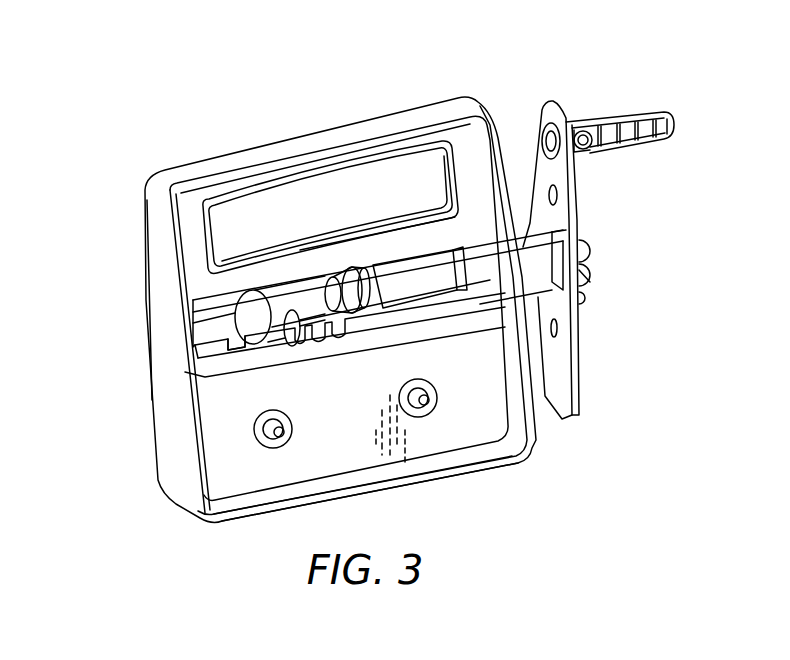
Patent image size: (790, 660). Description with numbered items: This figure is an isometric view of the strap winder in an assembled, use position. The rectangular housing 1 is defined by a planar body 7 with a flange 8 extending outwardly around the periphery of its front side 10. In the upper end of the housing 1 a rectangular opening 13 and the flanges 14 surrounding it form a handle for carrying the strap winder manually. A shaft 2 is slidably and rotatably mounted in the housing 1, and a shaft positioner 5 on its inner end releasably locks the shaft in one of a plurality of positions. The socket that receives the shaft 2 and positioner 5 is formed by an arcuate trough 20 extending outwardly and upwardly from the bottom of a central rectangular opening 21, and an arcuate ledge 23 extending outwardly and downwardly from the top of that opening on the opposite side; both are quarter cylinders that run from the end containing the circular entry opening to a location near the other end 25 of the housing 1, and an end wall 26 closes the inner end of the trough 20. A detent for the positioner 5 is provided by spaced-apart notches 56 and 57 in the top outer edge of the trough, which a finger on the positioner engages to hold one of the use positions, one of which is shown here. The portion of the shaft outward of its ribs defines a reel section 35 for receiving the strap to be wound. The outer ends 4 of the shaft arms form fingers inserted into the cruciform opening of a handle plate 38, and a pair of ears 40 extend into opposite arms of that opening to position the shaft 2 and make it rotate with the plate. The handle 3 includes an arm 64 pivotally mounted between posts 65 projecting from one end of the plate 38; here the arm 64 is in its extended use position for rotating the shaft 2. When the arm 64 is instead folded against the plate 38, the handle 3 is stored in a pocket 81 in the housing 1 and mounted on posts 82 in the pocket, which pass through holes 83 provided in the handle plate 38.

The housing 1 is at (453, 82).
The shaft 2 is at (410, 265).
The handle 3 is at (603, 348).
The outer ends 4 is at (590, 250).
The positioner 5 is at (297, 290).
The planar body 7 is at (197, 440).
The flange 8 is at (230, 152).
The front side 10 is at (183, 243).
The rectangular opening 13 is at (358, 240).
The flanges 14 is at (312, 180).
The trough 20 is at (460, 317).
The central rectangular opening 21 is at (192, 318).
The ledge 23 is at (273, 290).
The other end 25 is at (163, 483).
The end wall 26 is at (200, 363).
The reel section 35 is at (569, 300).
The handle plate 38 is at (560, 393).
The ears 40 is at (552, 232).
The notch 56 is at (243, 372).
The notch 57 is at (337, 346).
The arm 64 is at (647, 112).
The posts 65 is at (550, 100).
The pocket 81 is at (458, 458).
The posts 82 is at (291, 436).
The holes 83 is at (558, 193).